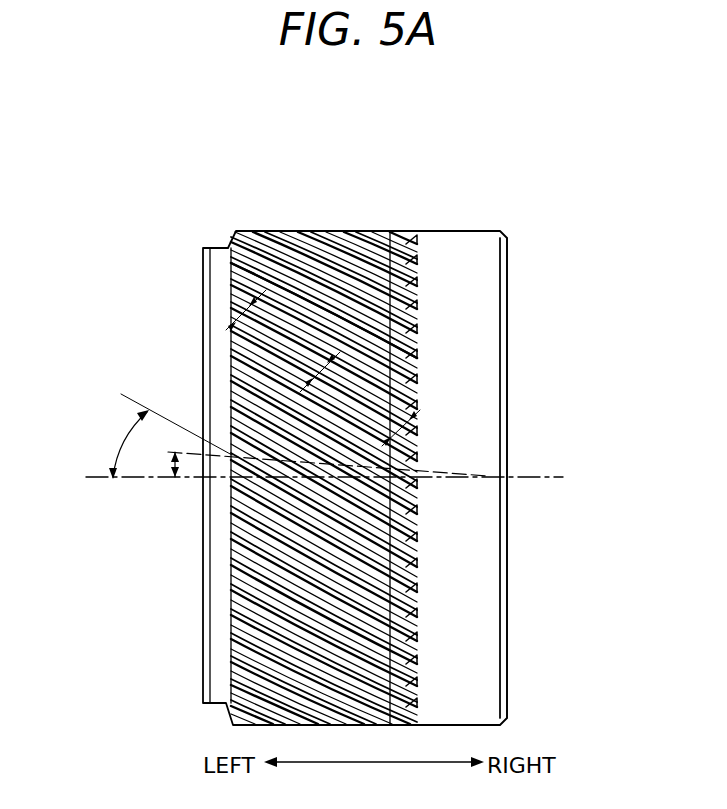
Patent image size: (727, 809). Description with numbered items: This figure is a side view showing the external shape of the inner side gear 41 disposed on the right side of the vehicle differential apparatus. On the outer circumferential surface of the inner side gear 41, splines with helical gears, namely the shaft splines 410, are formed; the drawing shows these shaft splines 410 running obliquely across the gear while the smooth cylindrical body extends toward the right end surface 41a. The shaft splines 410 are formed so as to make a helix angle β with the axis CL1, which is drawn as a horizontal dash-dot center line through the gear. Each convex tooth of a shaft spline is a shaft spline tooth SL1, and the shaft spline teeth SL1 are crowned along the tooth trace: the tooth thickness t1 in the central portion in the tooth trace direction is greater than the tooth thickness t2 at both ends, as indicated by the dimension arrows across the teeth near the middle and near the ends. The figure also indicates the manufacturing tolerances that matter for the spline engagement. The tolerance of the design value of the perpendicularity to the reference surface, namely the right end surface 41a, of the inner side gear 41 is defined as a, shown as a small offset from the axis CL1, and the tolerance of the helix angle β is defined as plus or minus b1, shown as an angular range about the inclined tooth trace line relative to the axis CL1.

The inner side gear 41 is at (478, 206).
The right end surface 41a is at (508, 250).
The helical spline 410 is at (280, 226).
The shaft spline tooth SL1 is at (348, 305).
The tooth thickness t1 is at (324, 374).
The tooth thickness t2 is at (335, 368).
The tolerance of perpendicularity a is at (320, 464).
The tolerance of helix angle b1 is at (143, 436).
The axis CL1 is at (348, 479).